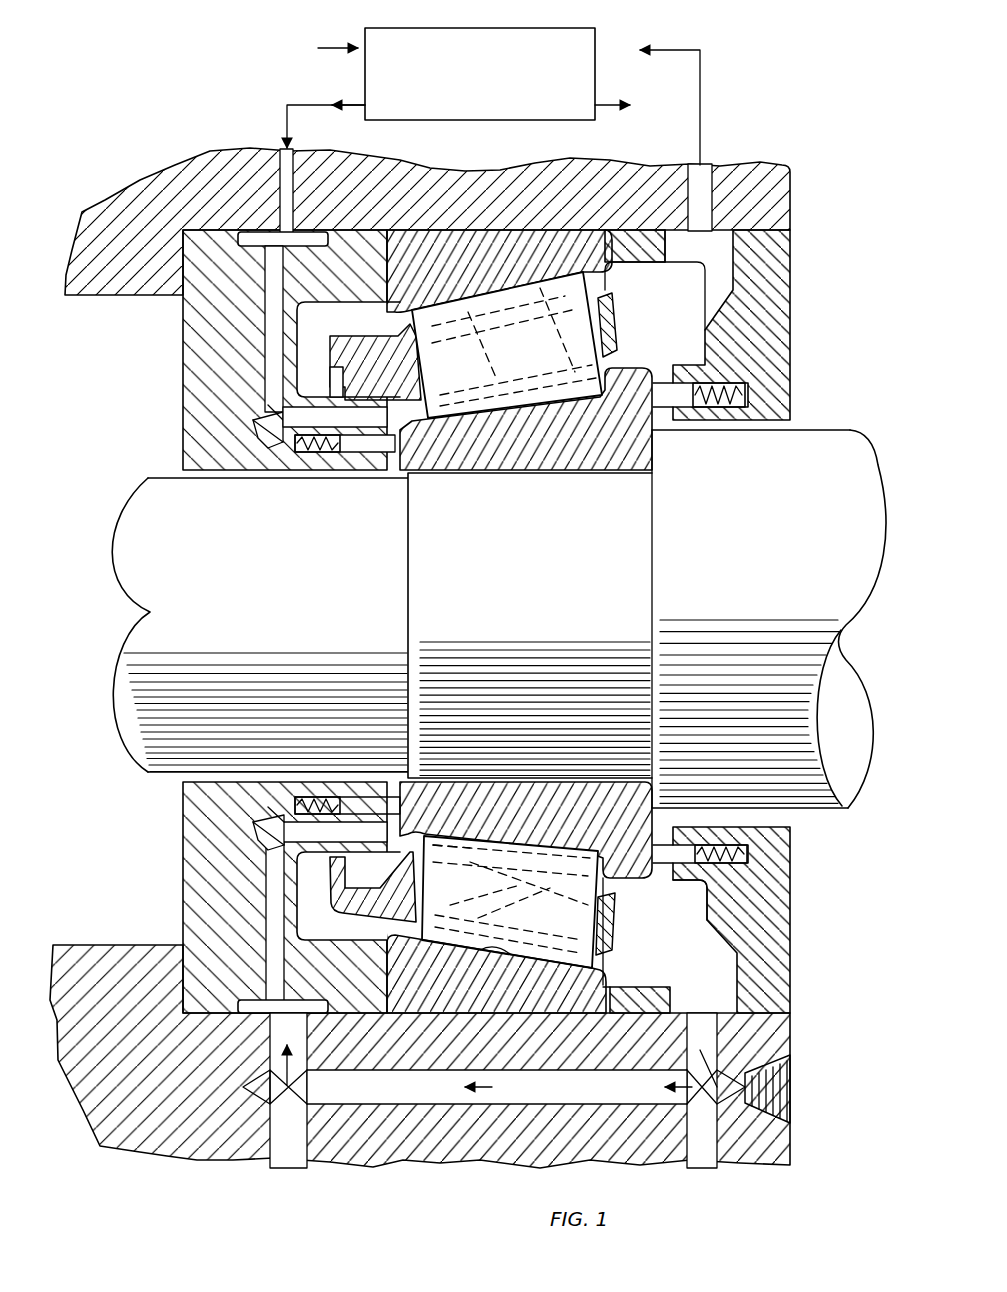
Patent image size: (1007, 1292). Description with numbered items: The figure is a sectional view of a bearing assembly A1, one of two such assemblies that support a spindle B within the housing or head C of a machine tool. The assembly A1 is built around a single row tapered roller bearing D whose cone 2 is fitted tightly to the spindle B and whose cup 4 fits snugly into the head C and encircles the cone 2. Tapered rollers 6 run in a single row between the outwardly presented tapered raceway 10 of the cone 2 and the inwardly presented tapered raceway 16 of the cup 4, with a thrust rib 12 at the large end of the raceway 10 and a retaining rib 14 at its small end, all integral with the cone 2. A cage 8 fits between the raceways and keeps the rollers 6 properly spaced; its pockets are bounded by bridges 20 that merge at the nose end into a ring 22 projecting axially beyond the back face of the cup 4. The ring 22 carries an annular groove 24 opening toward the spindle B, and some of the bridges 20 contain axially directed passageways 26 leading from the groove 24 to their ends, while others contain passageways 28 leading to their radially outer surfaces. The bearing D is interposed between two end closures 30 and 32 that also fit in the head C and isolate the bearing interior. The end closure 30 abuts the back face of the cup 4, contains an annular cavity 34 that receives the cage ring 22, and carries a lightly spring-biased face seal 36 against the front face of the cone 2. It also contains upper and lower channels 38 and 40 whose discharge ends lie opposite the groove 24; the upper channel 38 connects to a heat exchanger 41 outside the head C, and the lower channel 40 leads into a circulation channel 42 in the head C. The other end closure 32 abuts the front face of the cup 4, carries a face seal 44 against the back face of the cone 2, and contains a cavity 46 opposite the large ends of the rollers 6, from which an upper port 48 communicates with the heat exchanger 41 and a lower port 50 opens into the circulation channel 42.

The cone 2 is at (500, 814).
The cup 4 is at (515, 1005).
The tapered rollers 6 is at (575, 910).
The cage 8 is at (605, 305).
The tapered raceway 10 is at (612, 830).
The thrust rib 12 is at (625, 875).
The retaining rib 14 is at (430, 855).
The tapered raceway 16 is at (500, 948).
The bridges 20 is at (500, 297).
The ring 22 is at (405, 336).
The annular groove 24 is at (360, 383).
The axially directed passageways 26 is at (490, 370).
The passageways 28 is at (510, 902).
The end closure 30 is at (190, 313).
The end closure 32 is at (785, 300).
The annular cavity 34 is at (318, 318).
The face seal 36 is at (385, 470).
The upper channel 38 is at (253, 333).
The lower channel 40 is at (260, 887).
The heat exchanger 41 is at (463, 90).
The circulation channel 42 is at (405, 1085).
The face seal 44 is at (682, 398).
The cavity 46 is at (677, 328).
The upper port 48 is at (722, 240).
The lower port 50 is at (715, 988).
The bearing assembly A1 is at (178, 432).
The spindle B is at (517, 598).
The housing or head C is at (205, 148).
The single row tapered roller bearing D is at (612, 478).